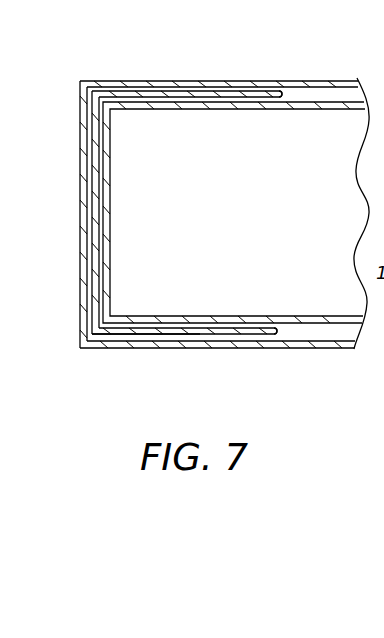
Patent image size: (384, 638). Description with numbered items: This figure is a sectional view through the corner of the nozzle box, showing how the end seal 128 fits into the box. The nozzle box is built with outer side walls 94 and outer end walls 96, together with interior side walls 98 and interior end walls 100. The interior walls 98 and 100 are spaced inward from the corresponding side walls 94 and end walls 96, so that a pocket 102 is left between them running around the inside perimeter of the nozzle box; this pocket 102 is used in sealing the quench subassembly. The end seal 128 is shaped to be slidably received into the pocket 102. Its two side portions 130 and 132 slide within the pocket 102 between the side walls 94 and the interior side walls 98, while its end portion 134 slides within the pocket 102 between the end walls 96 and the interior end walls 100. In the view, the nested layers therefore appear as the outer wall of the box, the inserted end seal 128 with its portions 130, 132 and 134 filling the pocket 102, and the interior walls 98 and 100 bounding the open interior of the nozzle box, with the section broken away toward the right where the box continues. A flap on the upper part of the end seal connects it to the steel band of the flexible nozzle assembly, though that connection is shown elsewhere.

The side wall 94 is at (222, 80).
The end wall 96 is at (80, 224).
The interior side wall 98 is at (226, 110).
The interior end wall 100 is at (112, 190).
The pocket 102 is at (311, 96).
The end seal 128 is at (102, 336).
The portion of end seal 130 is at (148, 91).
The portion of end seal 132 is at (153, 333).
The portion of end seal 134 is at (102, 152).